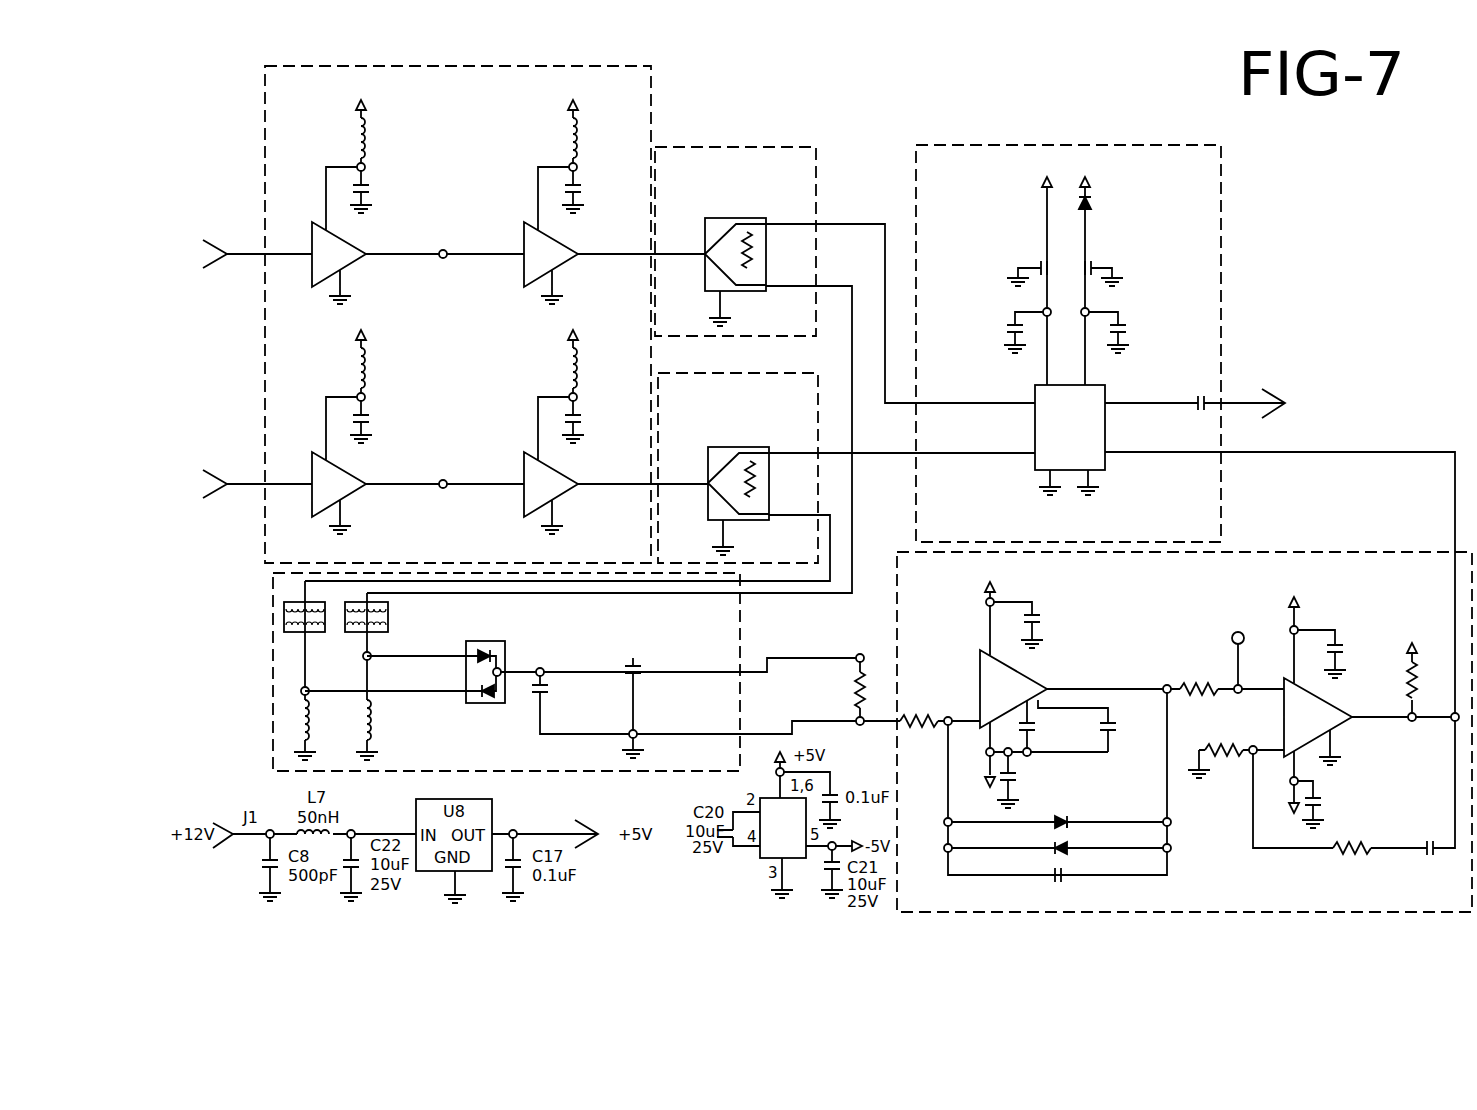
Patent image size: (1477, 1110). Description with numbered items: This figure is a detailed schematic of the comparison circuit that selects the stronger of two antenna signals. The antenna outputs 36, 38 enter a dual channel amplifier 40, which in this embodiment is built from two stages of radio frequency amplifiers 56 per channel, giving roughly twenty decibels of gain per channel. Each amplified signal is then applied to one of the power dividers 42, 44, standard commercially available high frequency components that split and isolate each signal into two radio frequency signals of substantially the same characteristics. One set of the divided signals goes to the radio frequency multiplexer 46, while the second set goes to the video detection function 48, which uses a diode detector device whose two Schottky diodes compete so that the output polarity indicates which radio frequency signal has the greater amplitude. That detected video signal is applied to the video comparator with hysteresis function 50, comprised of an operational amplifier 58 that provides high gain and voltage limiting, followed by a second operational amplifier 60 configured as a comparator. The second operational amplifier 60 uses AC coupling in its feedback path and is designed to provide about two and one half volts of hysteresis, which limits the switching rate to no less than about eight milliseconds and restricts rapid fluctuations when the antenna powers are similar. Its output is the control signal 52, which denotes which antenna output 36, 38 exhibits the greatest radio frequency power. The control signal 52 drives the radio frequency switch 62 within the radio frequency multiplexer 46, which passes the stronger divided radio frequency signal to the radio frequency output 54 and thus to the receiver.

The antenna output 36 is at (233, 217).
The antenna output 38 is at (233, 447).
The dual channel amplifier 40 is at (497, 311).
The power divider 42 is at (701, 339).
The power divider 44 is at (670, 462).
The radio frequency multiplexer 46 is at (1107, 343).
The video detection function 48 is at (566, 672).
The video comparator with hysteresis function 50 is at (1163, 703).
The control signal 52 is at (1280, 584).
The radio frequency output 54 is at (1229, 381).
The radio frequency amplifier 56 is at (490, 313).
The operational amplifier 58 is at (1058, 692).
The second operational amplifier 60 is at (1326, 710).
The radio frequency switch 62 is at (1099, 435).